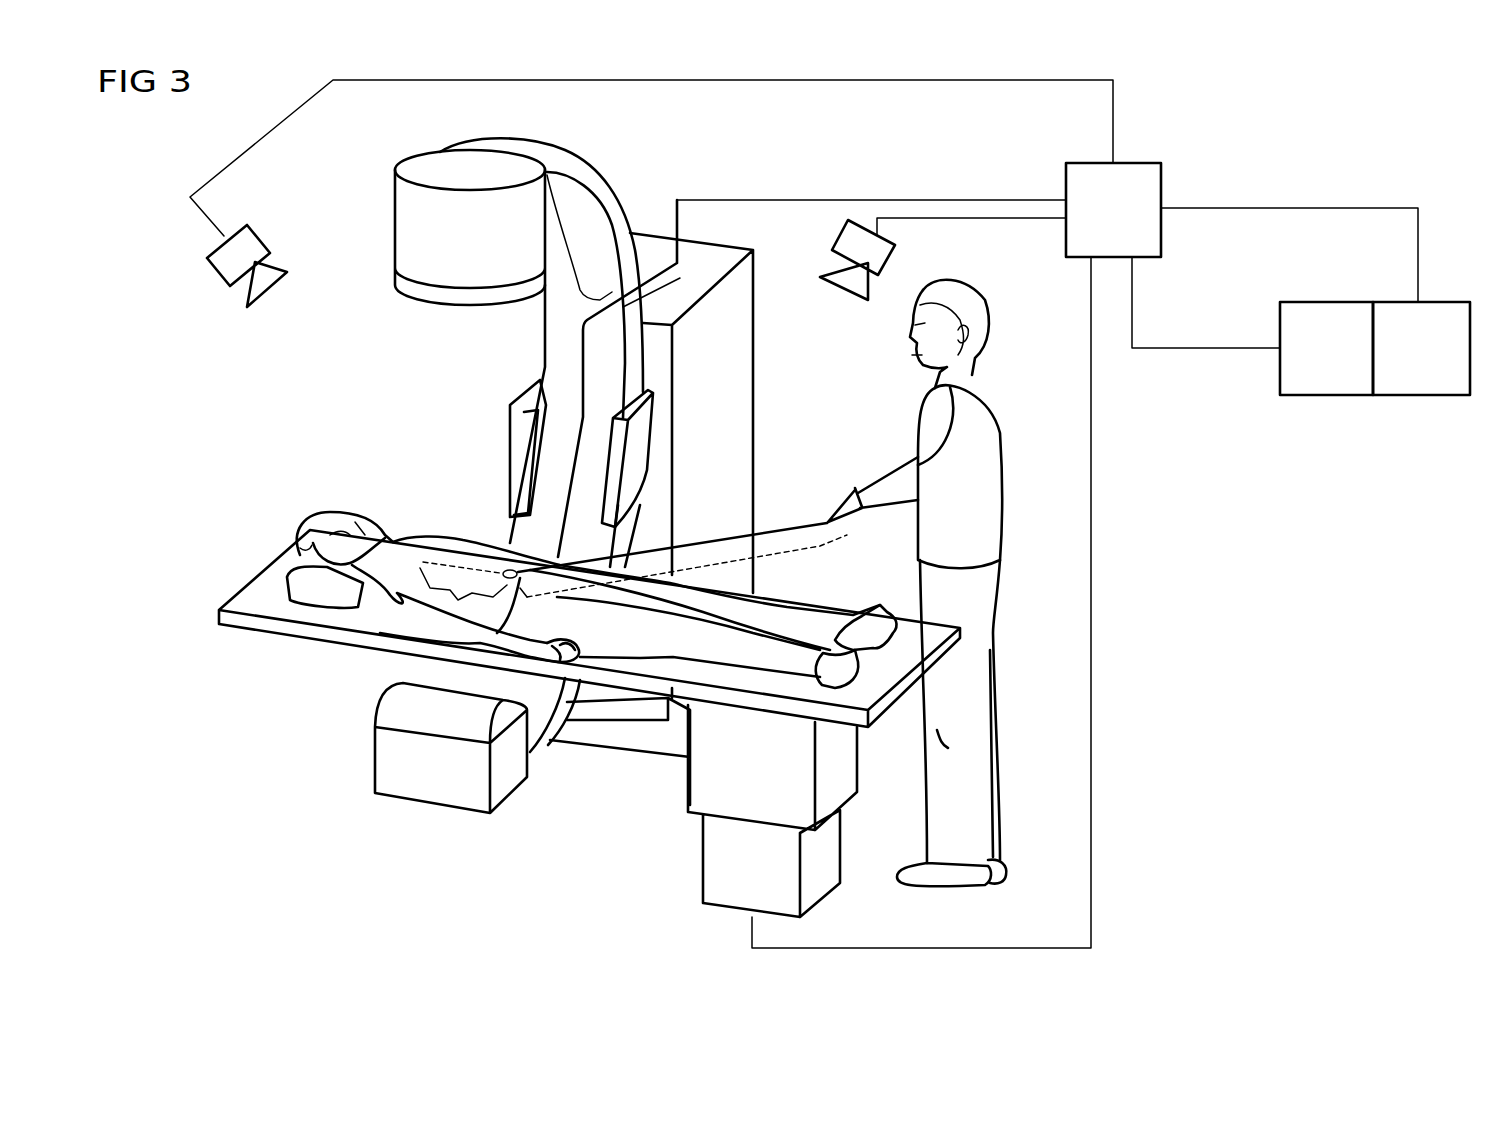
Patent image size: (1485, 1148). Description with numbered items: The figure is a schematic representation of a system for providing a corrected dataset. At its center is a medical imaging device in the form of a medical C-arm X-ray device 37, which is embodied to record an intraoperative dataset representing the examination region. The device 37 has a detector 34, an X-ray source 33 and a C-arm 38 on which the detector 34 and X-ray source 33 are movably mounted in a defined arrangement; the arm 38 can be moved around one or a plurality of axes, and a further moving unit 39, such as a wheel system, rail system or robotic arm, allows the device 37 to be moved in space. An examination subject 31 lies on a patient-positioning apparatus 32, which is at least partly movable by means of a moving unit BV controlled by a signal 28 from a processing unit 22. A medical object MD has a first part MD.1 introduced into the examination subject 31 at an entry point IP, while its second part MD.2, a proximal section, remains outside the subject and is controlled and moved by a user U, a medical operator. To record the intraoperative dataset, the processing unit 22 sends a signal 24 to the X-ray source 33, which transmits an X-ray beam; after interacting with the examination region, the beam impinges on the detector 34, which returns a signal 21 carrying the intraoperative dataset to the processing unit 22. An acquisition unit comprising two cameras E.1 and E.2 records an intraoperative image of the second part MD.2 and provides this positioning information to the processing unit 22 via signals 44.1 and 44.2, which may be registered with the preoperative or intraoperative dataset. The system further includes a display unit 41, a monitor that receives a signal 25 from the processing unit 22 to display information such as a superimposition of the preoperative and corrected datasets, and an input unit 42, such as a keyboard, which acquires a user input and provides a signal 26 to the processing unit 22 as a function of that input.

The signal 21 is at (567, 215).
The processing unit 22 is at (1162, 232).
The signal 24 is at (583, 338).
The signal 25 is at (1203, 350).
The signal 26 is at (1316, 206).
The signal 28 is at (1093, 602).
The examination subject 31 is at (368, 492).
The patient-positioning apparatus 32 is at (243, 625).
The X-ray source 33 is at (427, 795).
The detector 34 is at (407, 238).
The medical C-arm X-ray device 37 is at (536, 464).
The C-arm 38 is at (623, 213).
The further moving unit 39 is at (625, 740).
The display unit 41 is at (1320, 397).
The input unit 42 is at (1413, 397).
The signal 44.1 is at (1028, 220).
The signal 44.2 is at (928, 84).
The camera E.1 is at (843, 297).
The camera E.2 is at (207, 266).
The entry point IP is at (508, 566).
The medical object MD is at (782, 520).
The first part of the medical object MD.1 is at (473, 593).
The second part of the medical object MD.2 is at (737, 560).
The user U is at (997, 398).
The moving unit BV is at (820, 883).